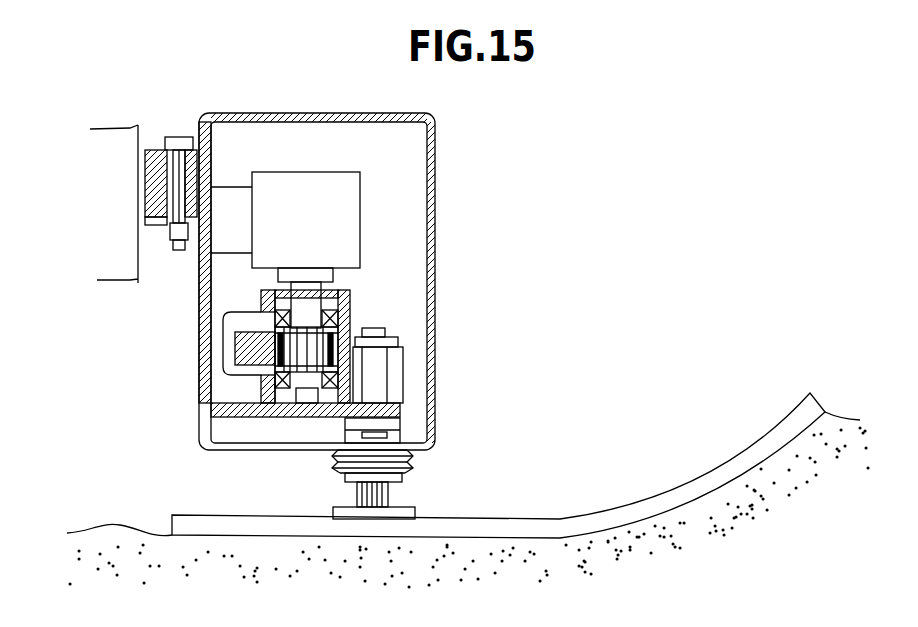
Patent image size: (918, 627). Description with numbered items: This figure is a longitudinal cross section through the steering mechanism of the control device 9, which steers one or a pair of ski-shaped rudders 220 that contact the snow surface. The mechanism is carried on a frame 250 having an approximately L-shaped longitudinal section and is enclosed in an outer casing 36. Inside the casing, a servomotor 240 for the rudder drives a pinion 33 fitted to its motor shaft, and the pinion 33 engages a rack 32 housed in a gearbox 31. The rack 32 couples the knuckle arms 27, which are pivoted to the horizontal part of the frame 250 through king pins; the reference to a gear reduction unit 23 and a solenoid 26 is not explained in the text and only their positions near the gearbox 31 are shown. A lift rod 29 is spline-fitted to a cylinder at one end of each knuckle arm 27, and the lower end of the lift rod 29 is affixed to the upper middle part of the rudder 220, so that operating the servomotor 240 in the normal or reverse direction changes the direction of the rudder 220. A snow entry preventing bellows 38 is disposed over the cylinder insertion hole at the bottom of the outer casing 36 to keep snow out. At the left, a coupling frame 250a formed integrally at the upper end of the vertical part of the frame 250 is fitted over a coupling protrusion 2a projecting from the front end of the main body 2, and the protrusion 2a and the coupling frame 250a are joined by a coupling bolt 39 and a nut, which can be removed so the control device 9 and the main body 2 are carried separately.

The main body 2 is at (118, 147).
The coupling protrusion 2a is at (150, 183).
The control device 9 is at (311, 263).
The gear reduction unit 23 is at (291, 357).
The solenoid 26 is at (373, 377).
The knuckle arm 27 is at (393, 342).
The lift rod 29 is at (388, 490).
The gearbox 31 is at (353, 303).
The rack 32 is at (247, 347).
The pinion 33 is at (300, 380).
The outer casing 36 is at (434, 180).
The snow entry preventing bellows 38 is at (413, 462).
The coupling bolt 39 is at (177, 137).
The ski-shaped rudder 220 is at (532, 532).
The servomotor for rudder 240 is at (325, 158).
The frame 250 is at (202, 377).
The coupling frame 250a is at (147, 223).